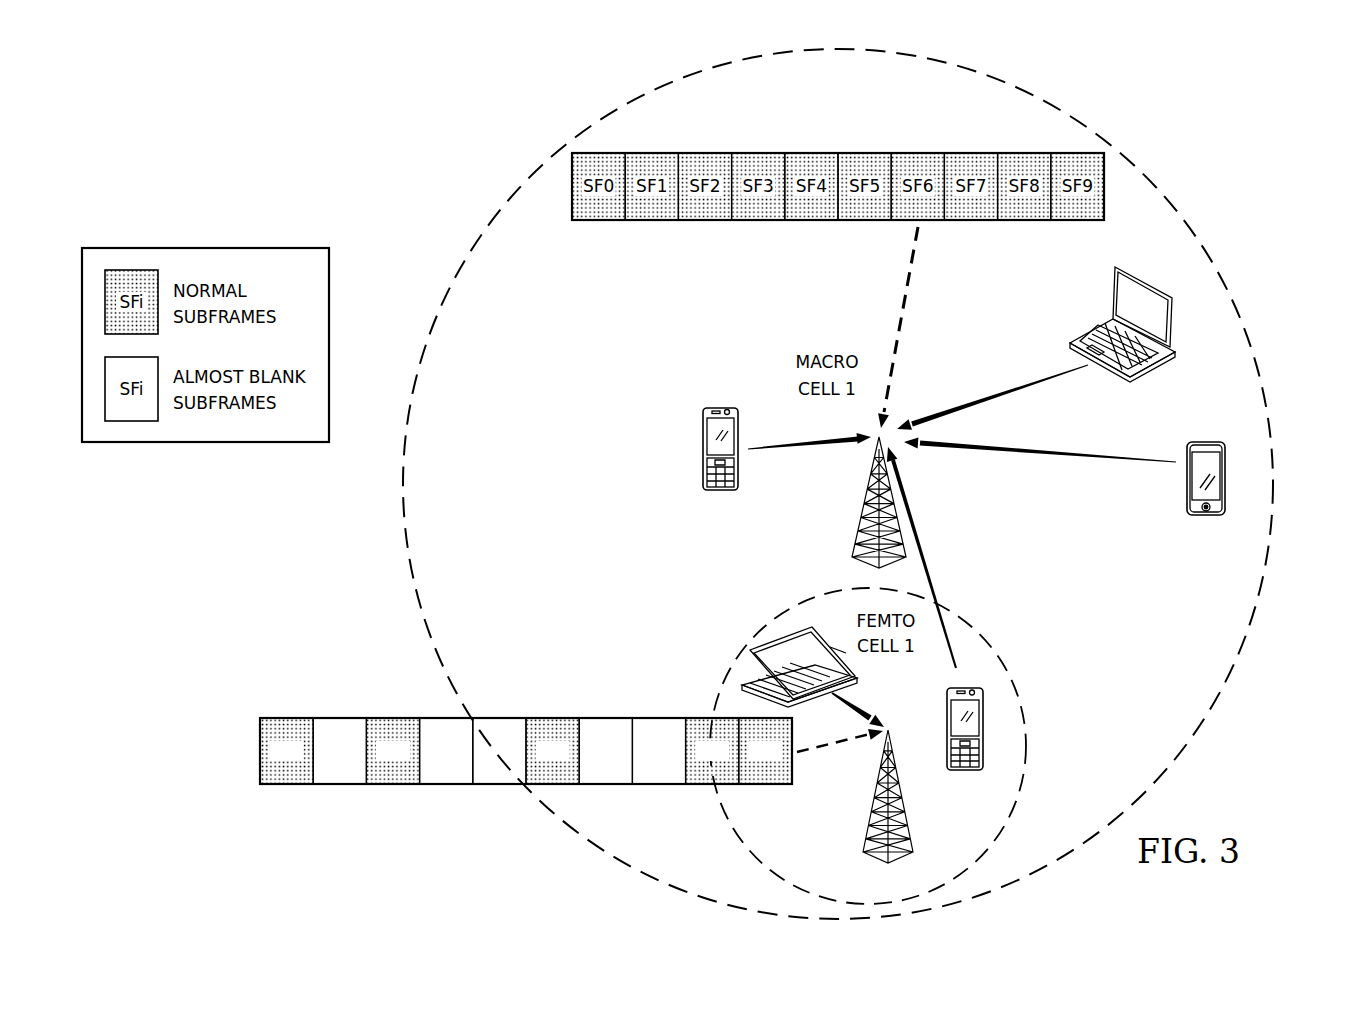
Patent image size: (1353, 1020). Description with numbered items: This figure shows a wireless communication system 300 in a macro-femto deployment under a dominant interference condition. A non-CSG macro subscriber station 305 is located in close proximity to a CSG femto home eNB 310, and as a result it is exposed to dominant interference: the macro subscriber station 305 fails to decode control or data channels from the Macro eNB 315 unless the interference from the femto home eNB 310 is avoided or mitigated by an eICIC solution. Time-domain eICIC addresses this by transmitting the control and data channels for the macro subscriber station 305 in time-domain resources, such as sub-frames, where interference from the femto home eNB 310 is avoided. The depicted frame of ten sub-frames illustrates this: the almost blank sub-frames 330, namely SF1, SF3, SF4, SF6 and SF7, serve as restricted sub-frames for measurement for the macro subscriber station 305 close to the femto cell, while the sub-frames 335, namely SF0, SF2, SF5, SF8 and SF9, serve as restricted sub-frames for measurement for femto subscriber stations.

The wireless communication system 300 is at (405, 167).
The non-CSG macro subscriber station (MUSS) 305 is at (963, 772).
The CSG femto home eNB (HeNB) 310 is at (863, 846).
The Macro eNB (MeNB) 315 is at (851, 540).
The almost blank sub-frames 330 is at (339, 786).
The sub-frames for femto subscriber stations 335 is at (287, 722).